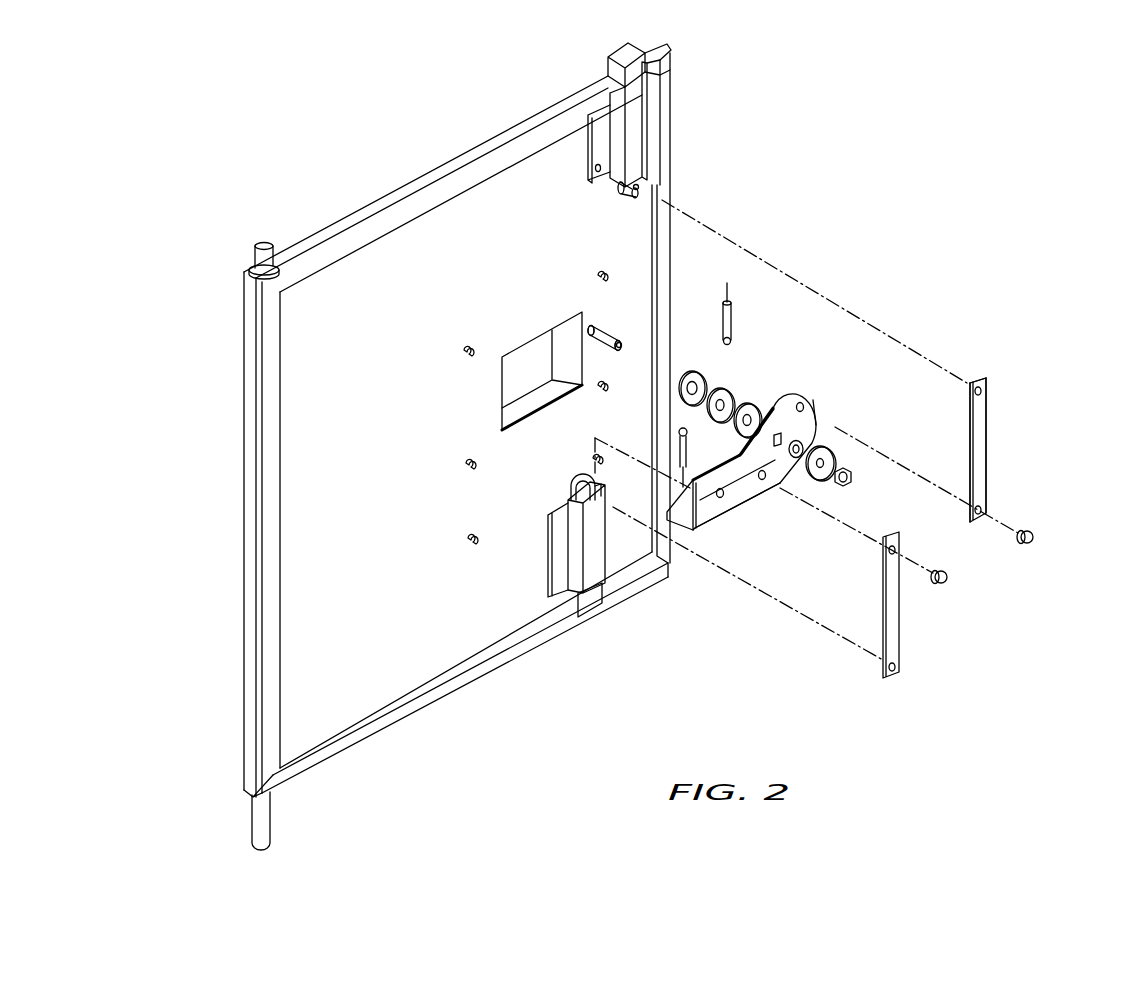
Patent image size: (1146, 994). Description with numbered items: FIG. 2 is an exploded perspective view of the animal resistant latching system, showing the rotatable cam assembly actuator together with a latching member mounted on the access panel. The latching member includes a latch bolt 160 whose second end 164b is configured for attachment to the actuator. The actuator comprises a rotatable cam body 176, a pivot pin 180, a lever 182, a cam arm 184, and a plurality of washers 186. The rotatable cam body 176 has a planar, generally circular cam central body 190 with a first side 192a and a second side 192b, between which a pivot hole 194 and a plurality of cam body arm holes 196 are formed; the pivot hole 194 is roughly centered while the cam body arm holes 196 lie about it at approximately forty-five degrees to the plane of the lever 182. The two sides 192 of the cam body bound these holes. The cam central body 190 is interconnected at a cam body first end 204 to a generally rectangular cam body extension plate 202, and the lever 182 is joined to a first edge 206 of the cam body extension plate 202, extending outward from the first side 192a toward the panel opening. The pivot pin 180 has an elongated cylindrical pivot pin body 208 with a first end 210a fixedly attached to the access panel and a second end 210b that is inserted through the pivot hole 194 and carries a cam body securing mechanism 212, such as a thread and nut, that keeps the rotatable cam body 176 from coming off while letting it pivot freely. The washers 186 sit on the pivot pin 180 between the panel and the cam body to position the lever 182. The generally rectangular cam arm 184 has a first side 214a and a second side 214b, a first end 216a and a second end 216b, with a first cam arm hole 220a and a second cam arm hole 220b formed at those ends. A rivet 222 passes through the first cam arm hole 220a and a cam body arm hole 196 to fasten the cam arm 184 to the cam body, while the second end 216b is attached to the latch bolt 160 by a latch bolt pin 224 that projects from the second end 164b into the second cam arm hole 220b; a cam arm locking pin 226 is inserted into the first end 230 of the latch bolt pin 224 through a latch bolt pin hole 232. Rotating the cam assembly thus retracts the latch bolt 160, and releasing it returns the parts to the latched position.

The latch bolt 160 is at (622, 53).
The second end of the latch bolt 164b is at (660, 153).
The latch bolt pin hole 232 is at (638, 186).
The first end of the latch bolt pin 230 is at (641, 192).
The latch bolt pin 224 is at (620, 193).
The cam arm locking pin 226 is at (732, 312).
The first end of the pivot pin 210a is at (593, 322).
The pivot pin body 208 is at (617, 337).
The cam body securing mechanism 212 is at (622, 342).
The washers 186 is at (745, 371).
The cam central body 190 is at (807, 388).
The first side of the rotatable cam body 192a is at (775, 402).
The second side of the rotatable cam body 192b is at (815, 422).
The cam body arm holes 196 is at (805, 405).
The second side of the cam arm 214b is at (970, 400).
The second end of the cam arm 216b is at (980, 383).
The second cam arm hole 220b is at (985, 391).
The first side of the cam arm 214a is at (980, 417).
The cam arm 184 is at (980, 450).
The pivot pin 180 is at (594, 348).
The second end of the pivot pin 210b is at (622, 352).
The pivot hole 194 is at (774, 441).
The lever 182 is at (683, 508).
The rotatable cam body 176 is at (829, 484).
The first cam arm hole 220a is at (987, 508).
The rivet 222 is at (1035, 540).
The bracket 192 is at (723, 505).
The first edge of the cam body extension plate 206 is at (740, 508).
The cam body first end 204 is at (775, 474).
The first end of the cam arm 216a is at (973, 522).
The cam body extension plate 202 is at (702, 507).